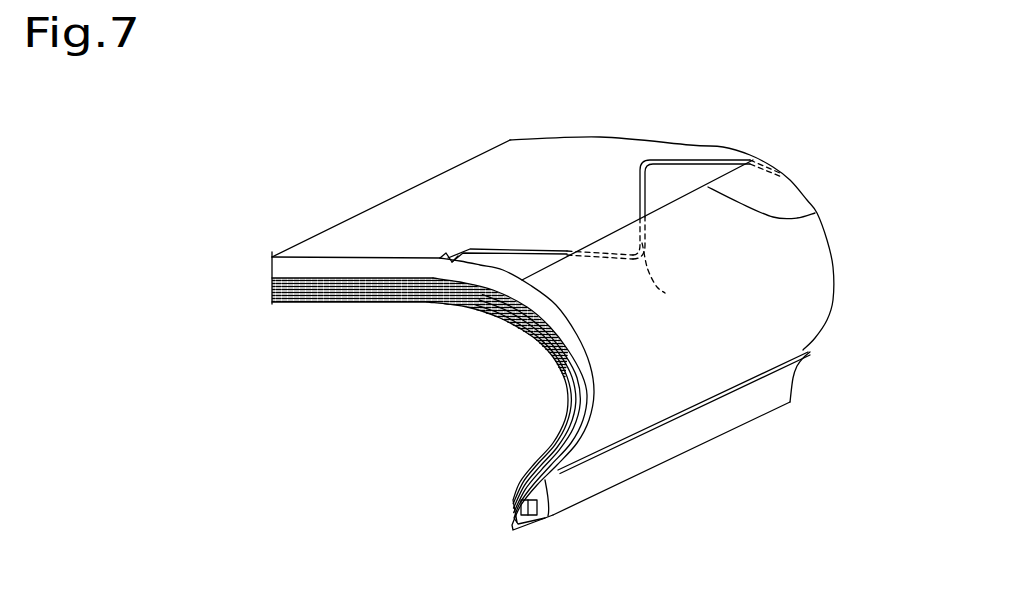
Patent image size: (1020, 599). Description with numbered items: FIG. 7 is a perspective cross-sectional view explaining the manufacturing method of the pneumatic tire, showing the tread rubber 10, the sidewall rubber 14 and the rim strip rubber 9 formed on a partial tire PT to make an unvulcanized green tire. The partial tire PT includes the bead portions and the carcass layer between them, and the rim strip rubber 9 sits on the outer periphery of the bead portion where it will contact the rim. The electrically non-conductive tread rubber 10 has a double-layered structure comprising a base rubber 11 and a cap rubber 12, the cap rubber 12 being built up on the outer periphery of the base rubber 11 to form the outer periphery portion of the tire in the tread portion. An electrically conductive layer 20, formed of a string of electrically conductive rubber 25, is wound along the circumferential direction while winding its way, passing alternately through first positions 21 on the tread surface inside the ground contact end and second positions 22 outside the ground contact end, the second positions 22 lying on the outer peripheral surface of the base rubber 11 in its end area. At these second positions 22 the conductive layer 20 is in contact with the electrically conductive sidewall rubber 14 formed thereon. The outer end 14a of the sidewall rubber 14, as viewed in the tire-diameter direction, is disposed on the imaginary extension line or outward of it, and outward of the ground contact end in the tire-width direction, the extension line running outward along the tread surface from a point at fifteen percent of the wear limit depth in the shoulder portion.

The rim strip rubber 9 is at (553, 513).
The tread rubber 10 is at (433, 336).
The base rubber 11 is at (357, 187).
The cap rubber 12 is at (342, 228).
The sidewall rubber 14 is at (820, 257).
The outer end of the sidewall rubber 14a is at (815, 213).
The electrically conductive layer 20 is at (546, 222).
The first positions 21 is at (668, 158).
The second positions 22 is at (672, 281).
The string of electrically conductive rubber 25 is at (640, 203).
The partial tire PT is at (457, 470).